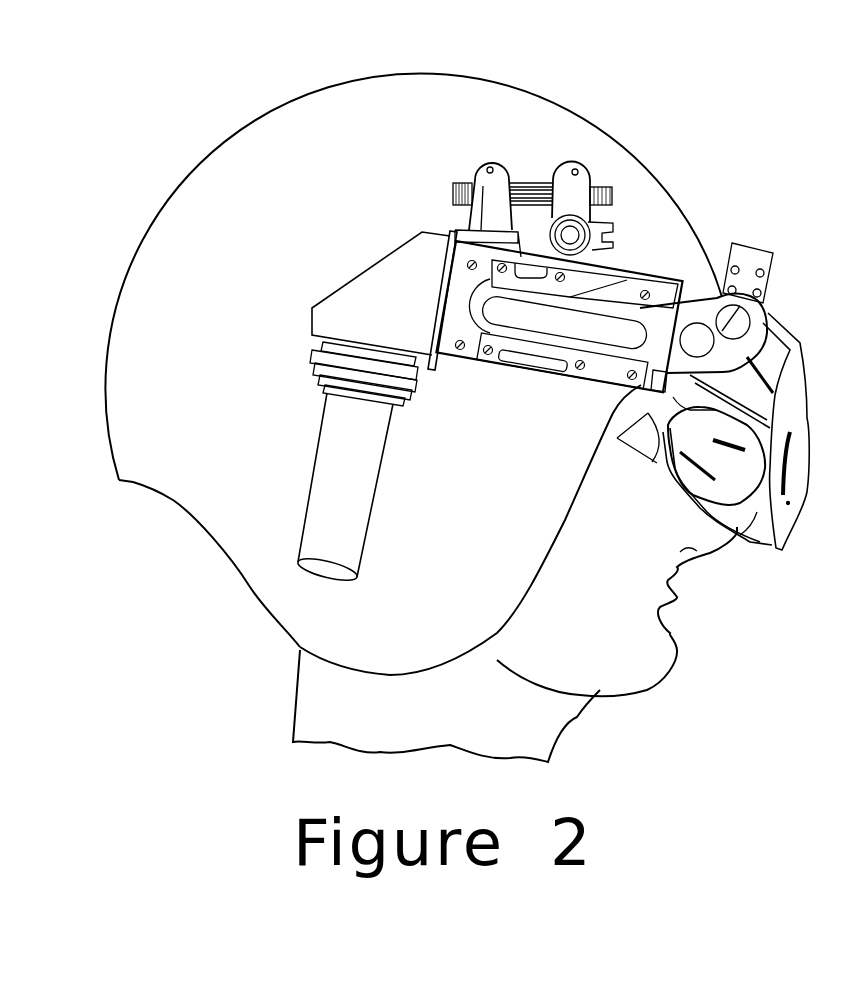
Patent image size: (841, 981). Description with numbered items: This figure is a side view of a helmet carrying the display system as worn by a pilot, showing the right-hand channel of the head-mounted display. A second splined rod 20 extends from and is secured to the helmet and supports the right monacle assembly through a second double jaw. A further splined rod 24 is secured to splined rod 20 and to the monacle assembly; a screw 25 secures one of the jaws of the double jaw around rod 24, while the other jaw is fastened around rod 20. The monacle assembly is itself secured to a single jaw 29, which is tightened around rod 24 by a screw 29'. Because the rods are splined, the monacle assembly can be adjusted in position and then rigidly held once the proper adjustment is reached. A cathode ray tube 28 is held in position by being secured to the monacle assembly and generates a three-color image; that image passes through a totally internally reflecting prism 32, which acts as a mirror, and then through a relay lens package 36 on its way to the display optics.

The second splined rod 20 is at (617, 206).
The splined rod 24 is at (540, 181).
The screw 25 is at (577, 168).
The cathode ray tube 28 is at (330, 515).
The single jaw 29 is at (423, 181).
The screw 29' is at (454, 133).
The totally internally reflecting prism 32 is at (352, 306).
The relay lens package 36 is at (523, 357).